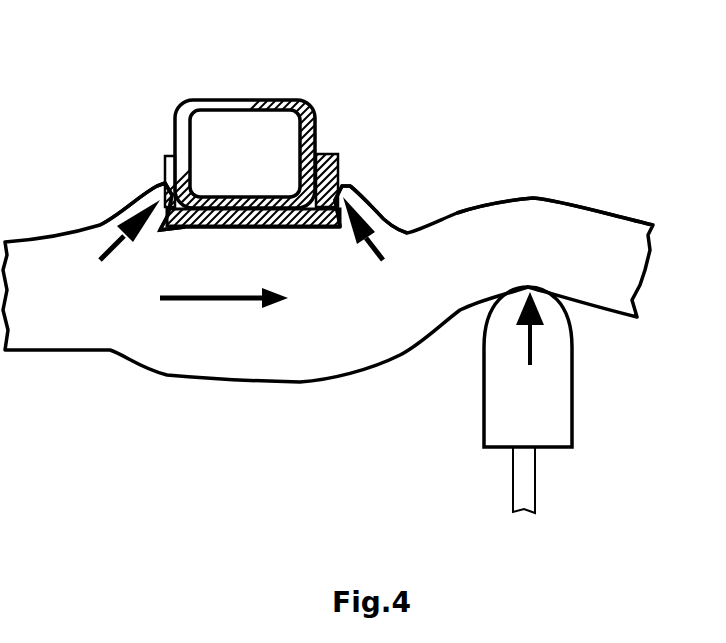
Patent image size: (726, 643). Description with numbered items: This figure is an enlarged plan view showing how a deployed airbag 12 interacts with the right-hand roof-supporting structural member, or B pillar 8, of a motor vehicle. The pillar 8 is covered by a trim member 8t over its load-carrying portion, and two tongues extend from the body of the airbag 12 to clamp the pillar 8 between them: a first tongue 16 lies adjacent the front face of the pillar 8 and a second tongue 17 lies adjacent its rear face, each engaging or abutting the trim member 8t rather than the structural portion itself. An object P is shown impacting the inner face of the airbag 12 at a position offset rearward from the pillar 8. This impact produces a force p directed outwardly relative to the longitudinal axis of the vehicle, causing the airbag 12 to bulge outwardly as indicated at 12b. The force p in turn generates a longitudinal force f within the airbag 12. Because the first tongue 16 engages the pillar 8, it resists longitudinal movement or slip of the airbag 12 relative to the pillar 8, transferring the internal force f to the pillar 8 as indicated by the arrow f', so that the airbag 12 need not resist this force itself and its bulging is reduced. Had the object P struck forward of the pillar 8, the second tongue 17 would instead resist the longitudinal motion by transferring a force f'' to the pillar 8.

The pillar 8 is at (222, 100).
The trim member 8t is at (323, 153).
The airbag 12 is at (88, 353).
The outward bulge of the airbag 12b is at (547, 198).
The first tongue 16 is at (142, 163).
The second tongue 17 is at (372, 212).
The longitudinal force f is at (224, 289).
The force transferred by first tongue f' is at (97, 211).
The force transferred by second tongue f'' is at (385, 213).
The object P is at (484, 418).
The impact force p is at (533, 350).